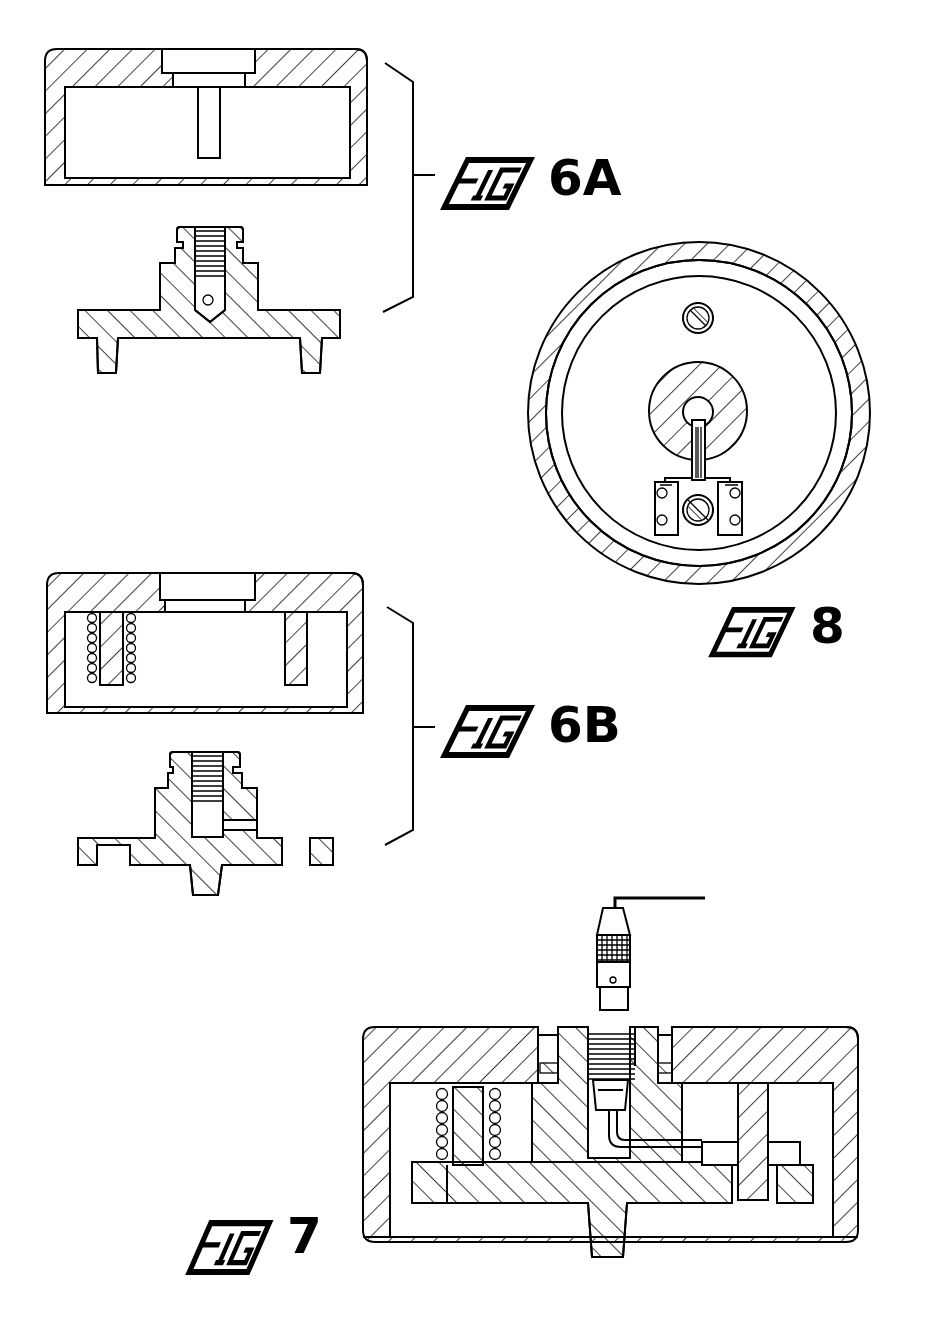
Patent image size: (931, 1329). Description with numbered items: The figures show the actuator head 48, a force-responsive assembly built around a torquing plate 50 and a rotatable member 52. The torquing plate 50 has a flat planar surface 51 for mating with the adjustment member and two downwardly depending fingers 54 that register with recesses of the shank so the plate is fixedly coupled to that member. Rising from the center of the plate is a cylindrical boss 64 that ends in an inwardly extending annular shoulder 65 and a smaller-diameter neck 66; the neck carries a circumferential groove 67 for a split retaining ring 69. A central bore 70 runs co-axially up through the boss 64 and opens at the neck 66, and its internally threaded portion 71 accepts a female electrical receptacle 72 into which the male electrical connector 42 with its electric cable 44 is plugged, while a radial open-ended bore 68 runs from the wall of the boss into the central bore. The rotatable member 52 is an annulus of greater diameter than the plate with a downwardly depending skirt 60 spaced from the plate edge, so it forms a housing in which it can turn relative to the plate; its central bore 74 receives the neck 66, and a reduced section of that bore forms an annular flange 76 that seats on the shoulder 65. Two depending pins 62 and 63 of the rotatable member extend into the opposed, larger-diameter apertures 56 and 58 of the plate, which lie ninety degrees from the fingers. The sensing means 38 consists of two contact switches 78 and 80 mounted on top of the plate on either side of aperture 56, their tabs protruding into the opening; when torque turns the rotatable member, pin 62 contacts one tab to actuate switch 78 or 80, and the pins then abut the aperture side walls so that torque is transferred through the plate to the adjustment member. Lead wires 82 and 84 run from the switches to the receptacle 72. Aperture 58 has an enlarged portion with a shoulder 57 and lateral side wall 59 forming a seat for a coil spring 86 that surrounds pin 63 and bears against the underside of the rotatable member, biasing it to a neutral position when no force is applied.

In FIG. 8, the sensing means 38 is at (632, 500).
In FIG. 7, the male electrical connector 42 is at (597, 950).
In FIG. 7, the electric cable 44 is at (660, 898).
In FIG. 7, the actuator head 48 is at (360, 1035).
In FIG. 6A, the torquing plate 50 is at (95, 310).
In FIG. 6B, the torquing plate 50 is at (78, 848).
In FIG. 8, the torquing plate 50 is at (790, 298).
In FIG. 7, the torquing plate 50 is at (797, 1200).
In FIG. 6A, the planar surface 51 is at (160, 340).
In FIG. 6B, the planar surface 51 is at (278, 865).
In FIG. 6A, the rotatable member 52 is at (268, 49).
In FIG. 6B, the rotatable member 52 is at (268, 573).
In FIG. 7, the rotatable member 52 is at (795, 1027).
In FIG. 6A, the fingers 54 is at (98, 362).
In FIG. 6B, the fingers 54 is at (192, 880).
In FIG. 7, the fingers 54 is at (594, 1258).
In FIG. 6B, the aperture 56 is at (300, 865).
In FIG. 8, the aperture 56 is at (698, 527).
In FIG. 7, the aperture 56 is at (752, 1203).
In FIG. 6B, the shoulder 57 is at (95, 838).
In FIG. 7, the shoulder 57 is at (440, 1150).
In FIG. 6B, the aperture 58 is at (112, 865).
In FIG. 8, the aperture 58 is at (714, 320).
In FIG. 7, the aperture 58 is at (453, 1170).
In FIG. 6B, the lateral side wall 59 is at (150, 838).
In FIG. 6A, the skirt 60 is at (367, 124).
In FIG. 6B, the skirt 60 is at (47, 634).
In FIG. 8, the skirt 60 is at (826, 322).
In FIG. 7, the skirt 60 is at (365, 1165).
In FIG. 6A, the pin 62 is at (220, 117).
In FIG. 6B, the pin 62 is at (285, 675).
In FIG. 8, the pin 62 is at (688, 522).
In FIG. 7, the pin 62 is at (745, 1205).
In FIG. 6B, the pin 63 is at (124, 680).
In FIG. 8, the pin 63 is at (683, 320).
In FIG. 7, the pin 63 is at (472, 1205).
In FIG. 6A, the boss 64 is at (160, 282).
In FIG. 6B, the boss 64 is at (257, 804).
In FIG. 7, the boss 64 is at (545, 1090).
In FIG. 6A, the annular shoulder 65 is at (175, 256).
In FIG. 6B, the annular shoulder 65 is at (243, 786).
In FIG. 6A, the neck 66 is at (243, 240).
In FIG. 6B, the neck 66 is at (240, 760).
In FIG. 8, the neck 66 is at (735, 385).
In FIG. 7, the neck 66 is at (665, 1060).
In FIG. 6A, the circumferential groove 67 is at (243, 250).
In FIG. 6B, the circumferential groove 67 is at (170, 768).
In FIG. 6A, the radial bore 68 is at (226, 300).
In FIG. 6B, the radial bore 68 is at (257, 826).
In FIG. 7, the radial bore 68 is at (657, 1140).
In FIG. 7, the retaining ring 69 is at (585, 1100).
In FIG. 6A, the central bore 70 is at (207, 306).
In FIG. 6B, the central bore 70 is at (212, 775).
In FIG. 8, the central bore 70 is at (690, 405).
In FIG. 7, the central bore 70 is at (605, 1140).
In FIG. 6A, the internally threaded portion 71 is at (205, 228).
In FIG. 6B, the internally threaded portion 71 is at (208, 762).
In FIG. 7, the internally threaded portion 71 is at (617, 1030).
In FIG. 7, the female electrical receptacle 72 is at (548, 1060).
In FIG. 6A, the central bore 74 is at (175, 66).
In FIG. 6B, the central bore 74 is at (170, 585).
In FIG. 7, the central bore 74 is at (688, 1034).
In FIG. 6A, the annular flange 76 is at (168, 80).
In FIG. 6B, the annular flange 76 is at (257, 612).
In FIG. 8, the contact switch 78 is at (645, 560).
In FIG. 8, the contact switch 80 is at (740, 535).
In FIG. 7, the contact switch 80 is at (760, 1142).
In FIG. 8, the lead wire 82 is at (665, 470).
In FIG. 7, the lead wire 82 is at (652, 1148).
In FIG. 8, the lead wire 84 is at (655, 485).
In FIG. 6B, the coil spring 86 is at (137, 640).
In FIG. 7, the coil spring 86 is at (437, 1108).